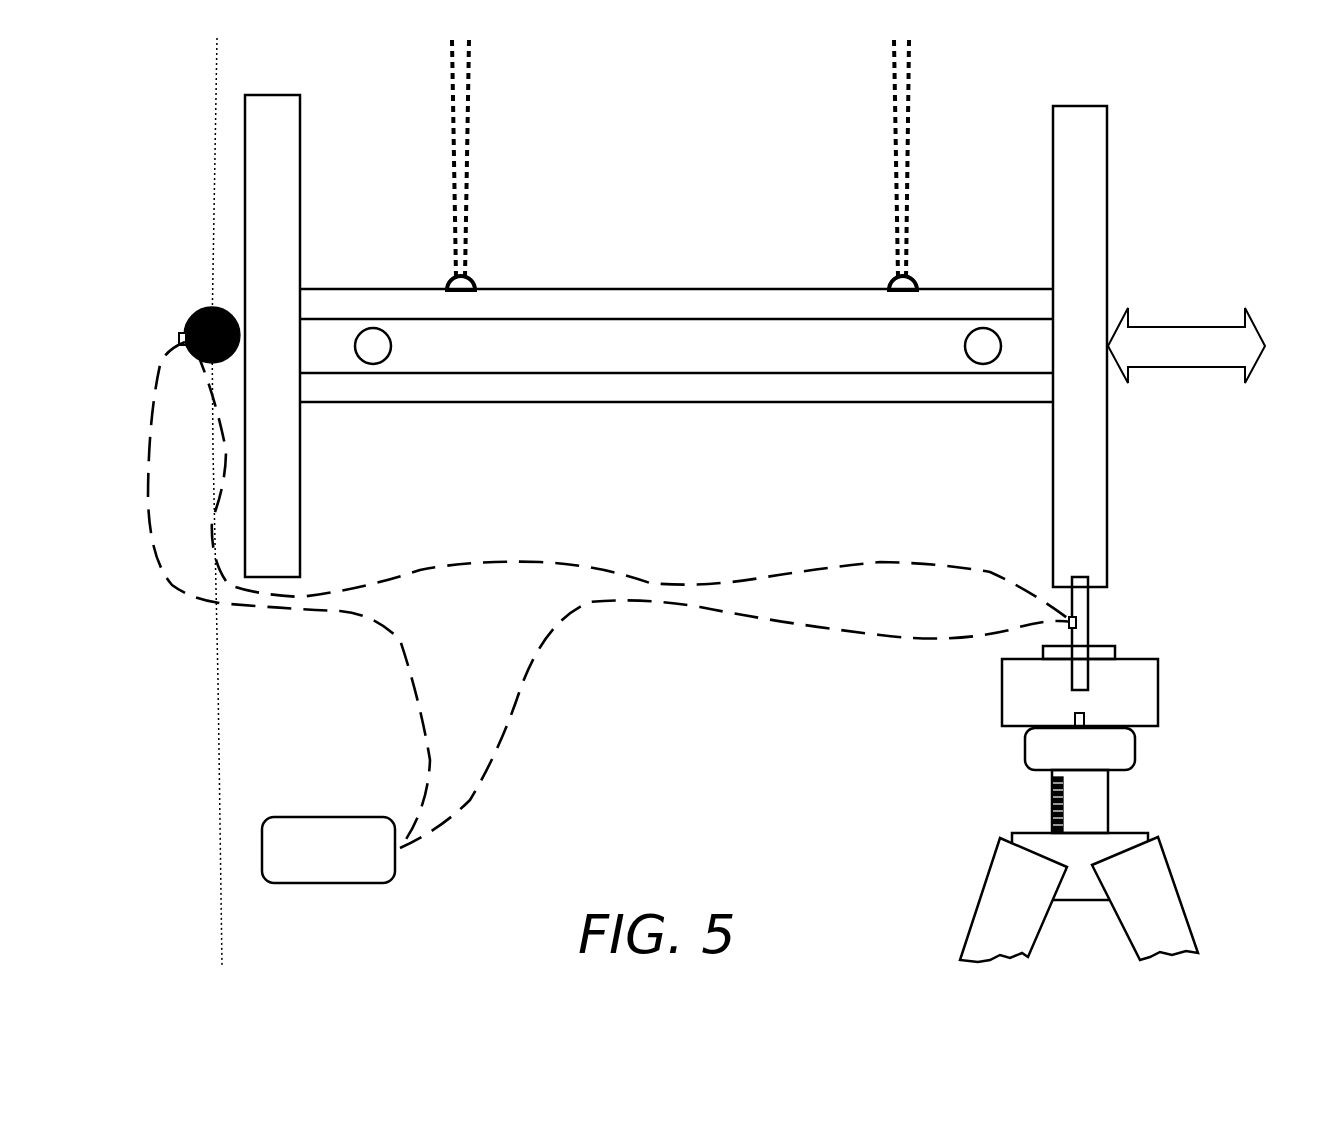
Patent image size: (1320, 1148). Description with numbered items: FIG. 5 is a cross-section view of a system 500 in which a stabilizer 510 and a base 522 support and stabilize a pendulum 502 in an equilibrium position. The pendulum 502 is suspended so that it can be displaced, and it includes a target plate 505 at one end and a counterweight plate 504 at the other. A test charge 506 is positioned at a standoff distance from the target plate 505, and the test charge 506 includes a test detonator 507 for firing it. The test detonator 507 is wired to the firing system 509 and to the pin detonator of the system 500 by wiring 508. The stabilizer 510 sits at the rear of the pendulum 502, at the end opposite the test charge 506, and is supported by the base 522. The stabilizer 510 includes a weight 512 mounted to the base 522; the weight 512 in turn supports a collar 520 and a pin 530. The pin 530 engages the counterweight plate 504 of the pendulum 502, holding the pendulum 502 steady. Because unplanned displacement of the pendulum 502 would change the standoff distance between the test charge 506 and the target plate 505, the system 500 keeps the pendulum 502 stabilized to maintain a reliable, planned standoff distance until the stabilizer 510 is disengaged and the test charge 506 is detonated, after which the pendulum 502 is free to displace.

The system 500 is at (1158, 550).
The pendulum 502 is at (1158, 140).
The counterweight plate 504 is at (1089, 505).
The target plate 505 is at (288, 492).
The test charge 506 is at (200, 313).
The test detonator 507 is at (180, 336).
The wiring 508 is at (535, 686).
The firing system 509 is at (337, 883).
The stabilizer 510 is at (970, 738).
The weight 512 is at (1150, 686).
The collar 520 is at (1114, 648).
The base 522 is at (968, 776).
The pin 530 is at (1090, 623).